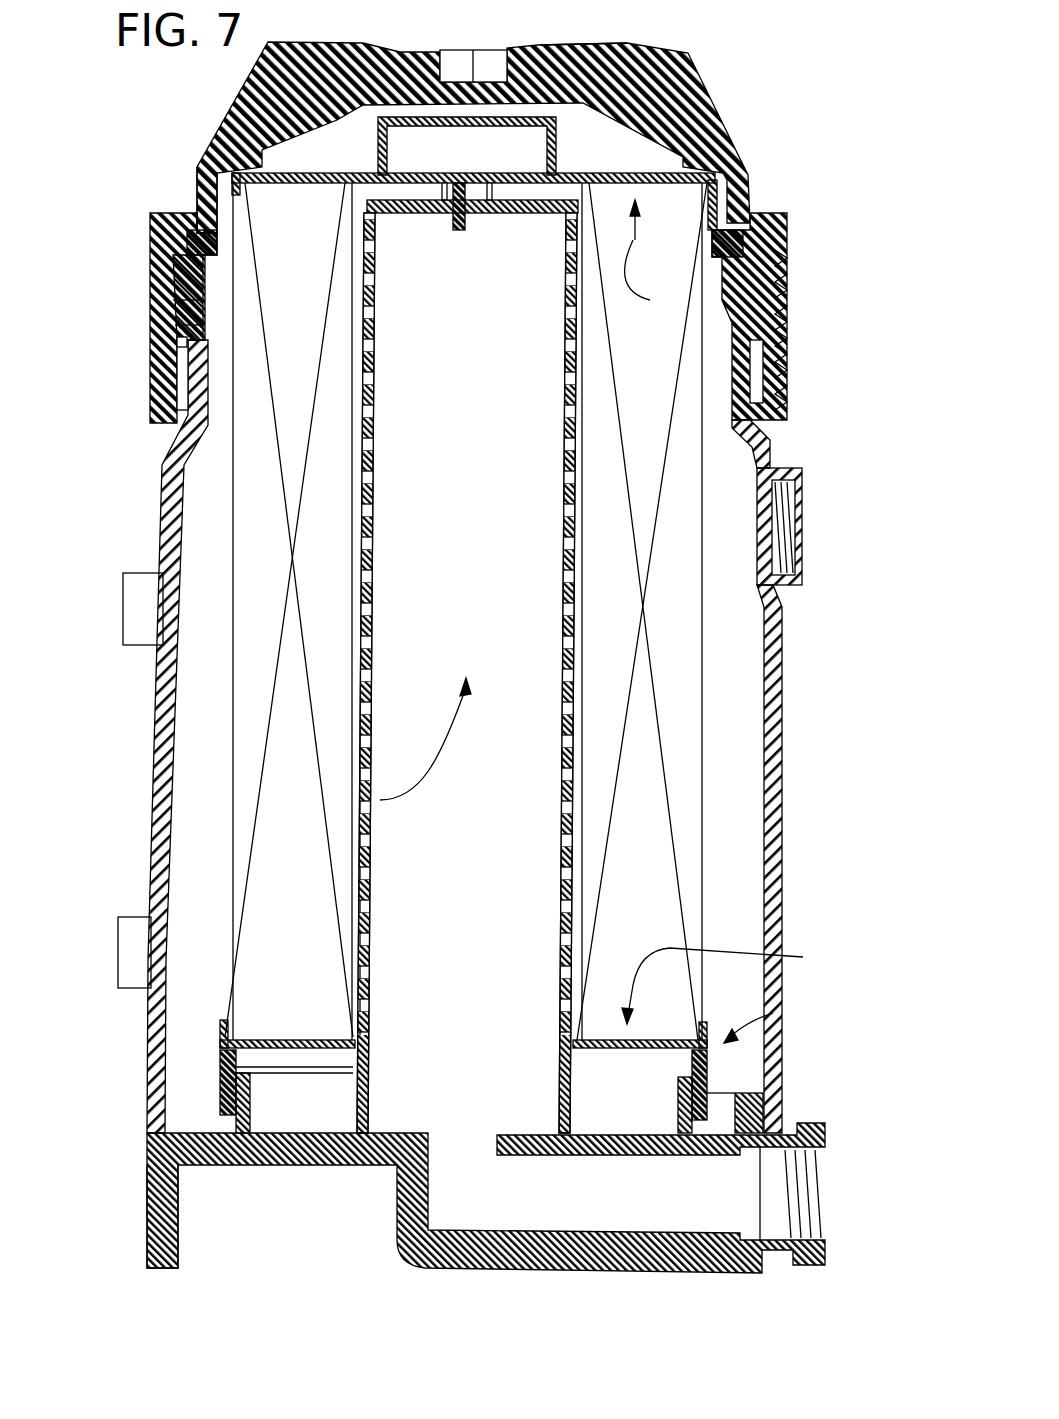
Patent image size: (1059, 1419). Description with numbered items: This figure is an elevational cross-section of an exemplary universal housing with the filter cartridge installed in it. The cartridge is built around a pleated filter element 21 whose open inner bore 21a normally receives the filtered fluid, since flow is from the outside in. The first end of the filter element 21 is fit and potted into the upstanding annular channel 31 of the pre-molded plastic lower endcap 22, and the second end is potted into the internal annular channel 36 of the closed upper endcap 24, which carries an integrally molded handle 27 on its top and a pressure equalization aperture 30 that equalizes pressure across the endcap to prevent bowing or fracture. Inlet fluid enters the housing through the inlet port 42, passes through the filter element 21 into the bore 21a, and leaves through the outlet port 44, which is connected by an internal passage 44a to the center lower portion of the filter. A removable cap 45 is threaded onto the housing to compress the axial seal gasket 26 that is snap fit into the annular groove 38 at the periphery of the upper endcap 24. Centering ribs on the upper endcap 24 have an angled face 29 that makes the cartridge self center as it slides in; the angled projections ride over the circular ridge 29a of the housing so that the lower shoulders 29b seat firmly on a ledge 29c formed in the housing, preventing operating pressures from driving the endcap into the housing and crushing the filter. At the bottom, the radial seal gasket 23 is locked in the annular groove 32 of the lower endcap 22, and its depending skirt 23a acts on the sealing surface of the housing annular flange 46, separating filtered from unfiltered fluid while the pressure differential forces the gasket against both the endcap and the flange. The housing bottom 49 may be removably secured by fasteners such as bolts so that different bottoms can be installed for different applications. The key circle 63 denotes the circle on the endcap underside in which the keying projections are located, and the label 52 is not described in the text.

The filter element 21 is at (250, 497).
The inner bore 21a is at (372, 798).
The lower endcap 22 is at (773, 1013).
The radial seal gasket 23 is at (707, 1073).
The skirt 23a is at (220, 1078).
The upper endcap 24 is at (748, 172).
The axial seal gasket 26 is at (158, 237).
The handle 27 is at (455, 118).
The angled face 29 is at (185, 275).
The circular ridge 29a is at (187, 243).
The lower shoulders 29b is at (175, 325).
The ledge 29c is at (175, 305).
The pressure equalization aperture 30 is at (728, 205).
The upstanding annular channel 31 is at (729, 612).
The annular groove 32 is at (270, 1043).
The internal annular channel 36 is at (720, 297).
The annular groove 38 is at (180, 340).
The inlet port 42 is at (790, 525).
The outlet port 44 is at (793, 1190).
The internal passage 44a is at (397, 1182).
The removable cap 45 is at (487, 192).
The annular flange 46 is at (250, 1105).
The bottom 49 is at (150, 1183).
The cap skirt 52 is at (200, 195).
The key circle 63 is at (577, 50).